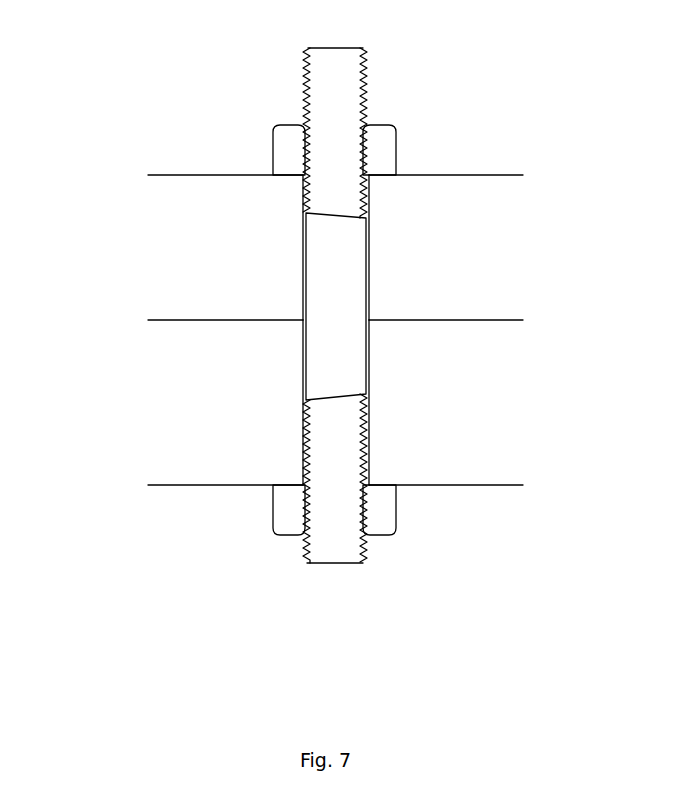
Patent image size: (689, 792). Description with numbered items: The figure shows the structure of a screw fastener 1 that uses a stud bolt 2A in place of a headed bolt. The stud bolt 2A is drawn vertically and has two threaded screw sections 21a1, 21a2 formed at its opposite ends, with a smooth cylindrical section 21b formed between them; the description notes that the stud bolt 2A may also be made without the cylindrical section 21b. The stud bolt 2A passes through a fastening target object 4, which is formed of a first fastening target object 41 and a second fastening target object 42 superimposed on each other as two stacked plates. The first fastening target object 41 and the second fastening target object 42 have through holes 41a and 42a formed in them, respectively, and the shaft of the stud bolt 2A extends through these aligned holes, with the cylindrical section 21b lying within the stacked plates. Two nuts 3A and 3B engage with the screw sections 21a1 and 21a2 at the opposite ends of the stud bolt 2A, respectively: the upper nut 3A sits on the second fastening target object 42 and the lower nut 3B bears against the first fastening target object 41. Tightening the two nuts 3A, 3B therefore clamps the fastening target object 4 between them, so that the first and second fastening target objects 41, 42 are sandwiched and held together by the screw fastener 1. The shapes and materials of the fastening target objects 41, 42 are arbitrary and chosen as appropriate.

The screw fastener 1 is at (140, 78).
The stud bolt 2A is at (345, 577).
The screw section 21a1 is at (322, 192).
The cylindrical section 21b is at (325, 362).
The screw section 21a2 is at (322, 433).
The nut 3A is at (285, 155).
The nut 3B is at (287, 510).
The fastening target object 4 is at (138, 172).
The first fastening target object 41 is at (488, 457).
The second fastening target object 42 is at (497, 205).
The through hole 41a is at (370, 412).
The through hole 42a is at (370, 272).